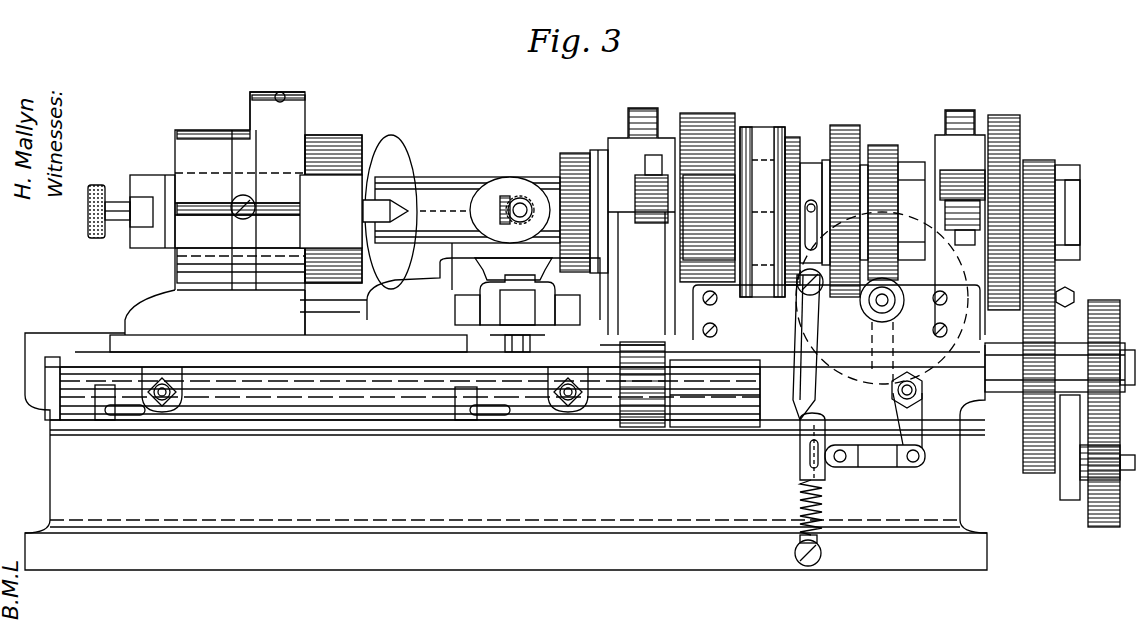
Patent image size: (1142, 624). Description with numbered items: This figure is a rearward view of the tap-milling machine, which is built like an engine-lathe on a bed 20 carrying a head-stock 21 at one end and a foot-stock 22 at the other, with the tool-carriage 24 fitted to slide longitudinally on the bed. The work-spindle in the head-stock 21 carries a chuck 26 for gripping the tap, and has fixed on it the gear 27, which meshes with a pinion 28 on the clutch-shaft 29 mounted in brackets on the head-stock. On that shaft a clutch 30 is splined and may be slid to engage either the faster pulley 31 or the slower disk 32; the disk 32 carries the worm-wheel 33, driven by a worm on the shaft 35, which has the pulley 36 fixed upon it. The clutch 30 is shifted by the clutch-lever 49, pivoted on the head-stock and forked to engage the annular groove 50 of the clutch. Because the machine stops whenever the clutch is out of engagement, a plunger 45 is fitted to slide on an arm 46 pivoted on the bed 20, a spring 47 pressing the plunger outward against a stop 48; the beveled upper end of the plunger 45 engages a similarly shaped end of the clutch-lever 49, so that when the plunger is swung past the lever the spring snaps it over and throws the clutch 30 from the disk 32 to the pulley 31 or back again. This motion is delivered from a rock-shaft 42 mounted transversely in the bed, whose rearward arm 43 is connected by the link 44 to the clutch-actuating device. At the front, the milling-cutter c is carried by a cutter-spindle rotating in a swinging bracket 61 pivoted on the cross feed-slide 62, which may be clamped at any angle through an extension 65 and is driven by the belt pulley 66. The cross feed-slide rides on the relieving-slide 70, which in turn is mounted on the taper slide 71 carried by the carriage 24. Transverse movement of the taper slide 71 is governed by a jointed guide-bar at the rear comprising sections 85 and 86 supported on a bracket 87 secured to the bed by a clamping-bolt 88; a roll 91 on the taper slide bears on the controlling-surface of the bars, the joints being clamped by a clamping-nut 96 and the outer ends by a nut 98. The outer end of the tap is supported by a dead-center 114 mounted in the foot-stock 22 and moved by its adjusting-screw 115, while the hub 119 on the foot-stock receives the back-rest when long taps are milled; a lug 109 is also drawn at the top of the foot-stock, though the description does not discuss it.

The bed 20 is at (506, 451).
The head-stock 21 is at (641, 221).
The foot-stock 22 is at (190, 128).
The tool-carriage 24 is at (308, 320).
The chuck 26 is at (573, 153).
The gear 27 is at (712, 113).
The pinion 28 is at (695, 240).
The clutch-shaft 29 is at (634, 205).
The clutch 30 is at (791, 135).
The faster pulley 31 is at (762, 127).
The slower disk 32 is at (848, 125).
The worm-wheel 33 is at (893, 146).
The shaft 35 is at (882, 306).
The pulley 36 is at (882, 298).
The rock-shaft 42 is at (922, 384).
The arm 43 is at (917, 430).
The link 44 is at (880, 460).
The plunger 45 is at (803, 472).
The arm 46 is at (796, 552).
The spring 47 is at (801, 503).
The stop 48 is at (810, 455).
The clutch-lever 49 is at (797, 378).
The annular groove 50 is at (813, 163).
The swinging bracket 61 is at (444, 178).
The cross feed-slide 62 is at (463, 252).
The extension 65 is at (481, 178).
The pulley 66 is at (360, 140).
The relieving-slide 70 is at (480, 280).
The taper slide 71 is at (517, 305).
The guide-bar section 85 is at (622, 345).
The guide-bar section 86 is at (212, 350).
The bracket 87 is at (260, 407).
The clamping-bolt 88 is at (162, 404).
The roll 91 is at (522, 352).
The clamping-nut 96 is at (460, 422).
The nut 98 is at (98, 420).
The lug 109 is at (258, 100).
The dead-center 114 is at (390, 200).
The adjusting-screw 115 is at (163, 200).
The hub 119 is at (190, 258).
The milling-cutter c is at (525, 196).